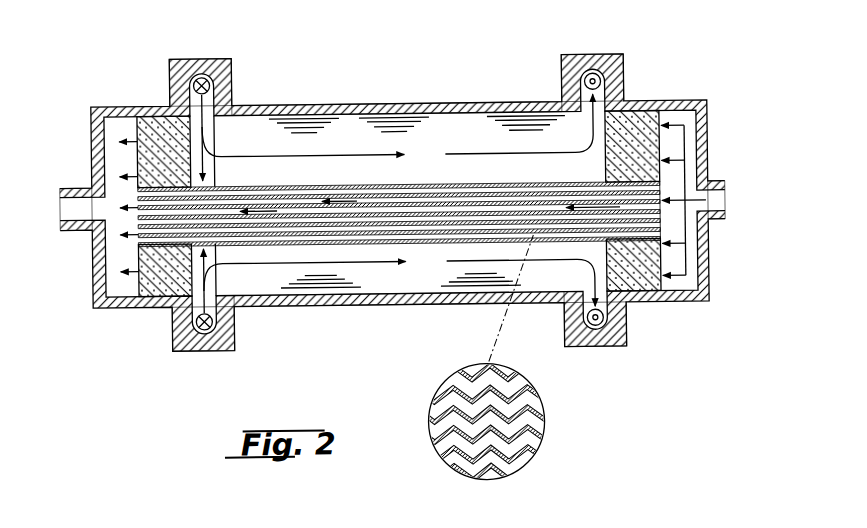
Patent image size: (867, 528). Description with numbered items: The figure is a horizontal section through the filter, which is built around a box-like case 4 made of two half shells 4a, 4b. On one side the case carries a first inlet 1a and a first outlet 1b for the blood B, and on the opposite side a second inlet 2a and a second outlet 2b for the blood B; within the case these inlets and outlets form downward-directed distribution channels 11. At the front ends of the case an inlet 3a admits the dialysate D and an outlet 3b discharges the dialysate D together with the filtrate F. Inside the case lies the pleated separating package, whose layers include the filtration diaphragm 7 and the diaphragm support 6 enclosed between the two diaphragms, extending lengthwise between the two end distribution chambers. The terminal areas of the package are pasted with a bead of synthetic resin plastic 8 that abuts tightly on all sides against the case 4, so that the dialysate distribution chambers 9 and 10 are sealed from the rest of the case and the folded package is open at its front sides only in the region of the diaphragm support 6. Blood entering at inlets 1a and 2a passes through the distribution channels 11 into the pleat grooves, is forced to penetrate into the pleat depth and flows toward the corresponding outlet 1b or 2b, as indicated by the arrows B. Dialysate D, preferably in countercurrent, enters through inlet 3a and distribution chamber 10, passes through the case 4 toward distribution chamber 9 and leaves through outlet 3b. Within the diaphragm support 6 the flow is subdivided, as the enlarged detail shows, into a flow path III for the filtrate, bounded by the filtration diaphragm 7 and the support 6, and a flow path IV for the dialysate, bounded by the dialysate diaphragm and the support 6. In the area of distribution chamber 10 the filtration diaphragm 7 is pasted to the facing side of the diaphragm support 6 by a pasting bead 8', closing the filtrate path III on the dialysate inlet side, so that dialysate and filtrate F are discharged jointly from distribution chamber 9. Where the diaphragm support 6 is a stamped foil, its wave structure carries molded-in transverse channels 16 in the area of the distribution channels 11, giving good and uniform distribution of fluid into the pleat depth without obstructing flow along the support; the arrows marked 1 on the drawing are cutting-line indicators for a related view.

The heat exchanger 1 is at (403, 209).
The first inlet 1a is at (205, 58).
The first outlet 1b is at (607, 58).
The second inlet 2a is at (230, 354).
The second outlet 2b is at (606, 354).
The inlet for dialysate 3a is at (722, 233).
The outlet for dialysate and/or filtrate 3b is at (80, 233).
The box-like case 4 is at (403, 208).
The half shell 4a is at (378, 108).
The half shell 4b is at (394, 308).
The diaphragm support 6 is at (416, 201).
The filtration diaphragm 7 is at (298, 118).
The pasting bead of synthetic resin plastic 8 is at (409, 202).
The pasting bead 8' is at (677, 210).
The distribution chamber 9 is at (109, 297).
The distribution chamber 10 is at (690, 285).
The distribution channels 11 is at (216, 90).
The transverse channel 16 is at (217, 145).
The blood B is at (398, 202).
The dialysate D is at (352, 206).
The filtrate F is at (275, 218).
The flow path for the filtrate III is at (422, 192).
The flow path for the dialysate IV is at (556, 192).